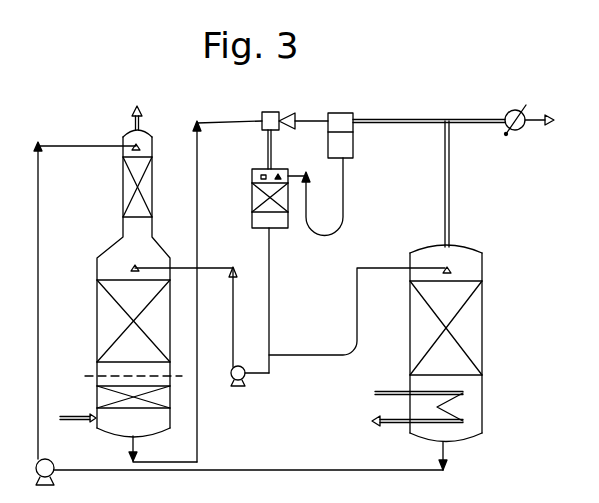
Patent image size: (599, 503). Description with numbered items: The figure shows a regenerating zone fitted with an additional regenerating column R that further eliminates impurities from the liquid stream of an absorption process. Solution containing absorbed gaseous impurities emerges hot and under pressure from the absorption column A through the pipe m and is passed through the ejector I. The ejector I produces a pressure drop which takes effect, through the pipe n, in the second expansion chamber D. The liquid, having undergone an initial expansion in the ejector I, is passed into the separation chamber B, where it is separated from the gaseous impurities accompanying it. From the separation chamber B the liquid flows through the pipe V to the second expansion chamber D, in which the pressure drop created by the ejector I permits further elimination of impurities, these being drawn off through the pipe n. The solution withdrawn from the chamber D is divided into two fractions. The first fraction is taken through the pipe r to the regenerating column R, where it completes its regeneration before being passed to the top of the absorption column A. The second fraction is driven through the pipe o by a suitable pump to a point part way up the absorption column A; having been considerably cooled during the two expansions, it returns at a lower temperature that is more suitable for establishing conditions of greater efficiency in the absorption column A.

The absorption column A is at (238, 295).
The separation chamber B is at (350, 135).
The second expansion chamber D is at (260, 198).
The regenerating column R is at (442, 295).
The ejector I is at (287, 116).
The pipe V is at (322, 197).
The pipe n is at (276, 149).
The pipe o is at (202, 326).
The pipe m is at (163, 449).
The pipe r is at (357, 301).